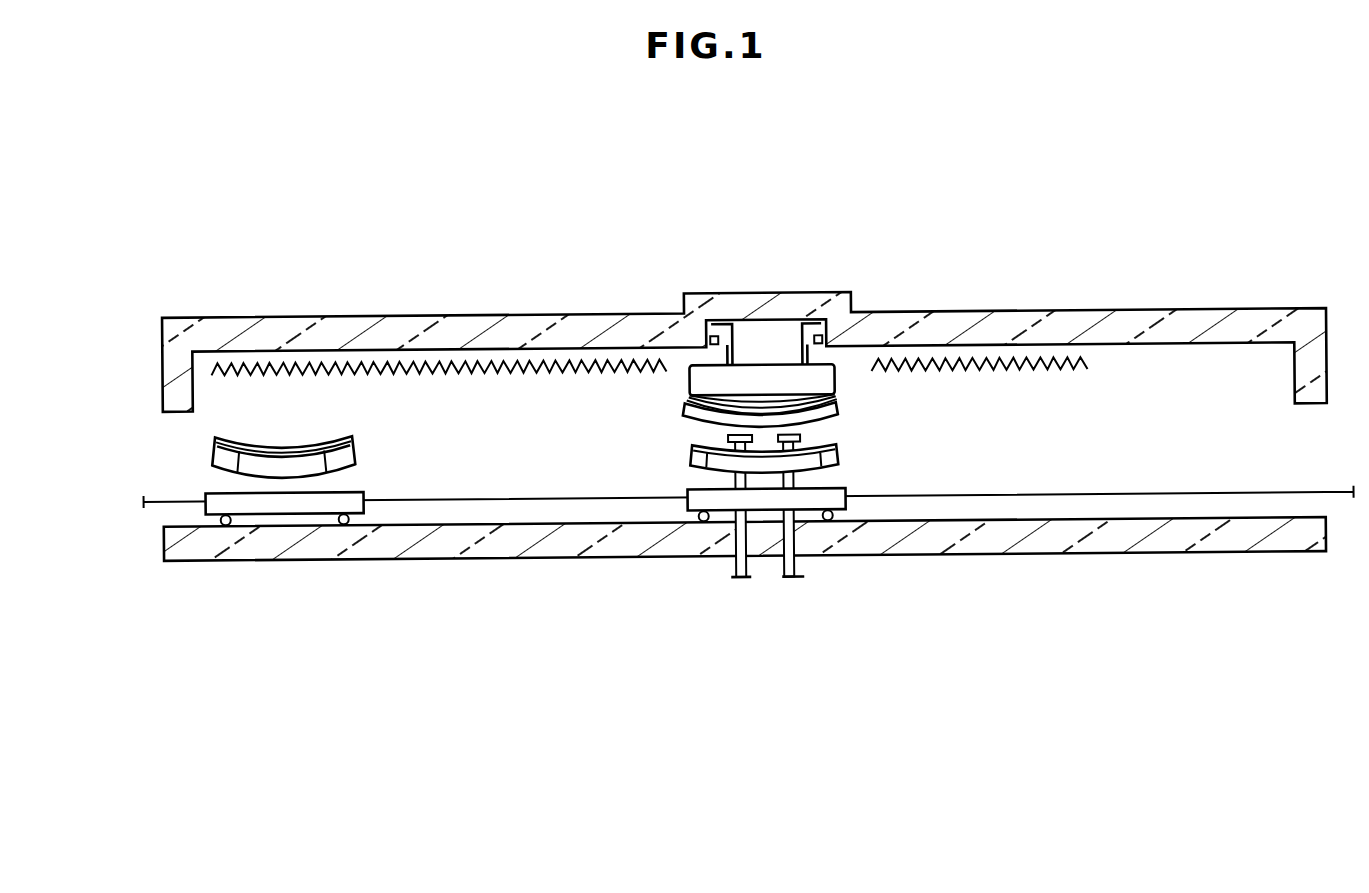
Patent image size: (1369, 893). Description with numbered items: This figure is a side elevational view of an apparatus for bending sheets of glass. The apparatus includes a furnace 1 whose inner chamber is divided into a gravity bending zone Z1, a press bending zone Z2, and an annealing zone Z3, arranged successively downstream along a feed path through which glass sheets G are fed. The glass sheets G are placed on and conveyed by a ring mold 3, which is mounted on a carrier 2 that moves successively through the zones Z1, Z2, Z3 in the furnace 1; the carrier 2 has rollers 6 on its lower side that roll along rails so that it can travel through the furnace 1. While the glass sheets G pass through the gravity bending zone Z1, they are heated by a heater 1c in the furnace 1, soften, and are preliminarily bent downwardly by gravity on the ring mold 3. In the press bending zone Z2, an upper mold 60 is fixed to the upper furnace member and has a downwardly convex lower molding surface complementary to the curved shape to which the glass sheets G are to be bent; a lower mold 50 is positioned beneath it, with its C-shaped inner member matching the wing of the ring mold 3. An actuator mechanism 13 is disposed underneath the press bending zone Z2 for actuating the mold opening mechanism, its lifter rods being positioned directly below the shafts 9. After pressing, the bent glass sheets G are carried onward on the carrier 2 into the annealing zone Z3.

The furnace 1 is at (599, 312).
The heater 1c is at (528, 370).
The carrier 2 is at (287, 506).
The ring mold 3 is at (310, 466).
The rollers 6 is at (343, 522).
The shafts 9 is at (832, 391).
The actuator mechanism 13 is at (795, 568).
The lower mold 50 is at (828, 419).
The upper mold 60 is at (763, 380).
The glass sheets G is at (267, 449).
The gravity bending zone Z1 is at (445, 406).
The press bending zone Z2 is at (758, 347).
The annealing zone Z3 is at (1037, 411).